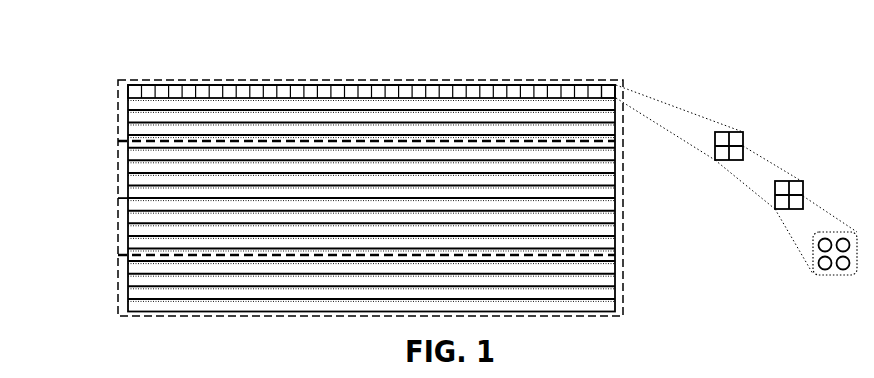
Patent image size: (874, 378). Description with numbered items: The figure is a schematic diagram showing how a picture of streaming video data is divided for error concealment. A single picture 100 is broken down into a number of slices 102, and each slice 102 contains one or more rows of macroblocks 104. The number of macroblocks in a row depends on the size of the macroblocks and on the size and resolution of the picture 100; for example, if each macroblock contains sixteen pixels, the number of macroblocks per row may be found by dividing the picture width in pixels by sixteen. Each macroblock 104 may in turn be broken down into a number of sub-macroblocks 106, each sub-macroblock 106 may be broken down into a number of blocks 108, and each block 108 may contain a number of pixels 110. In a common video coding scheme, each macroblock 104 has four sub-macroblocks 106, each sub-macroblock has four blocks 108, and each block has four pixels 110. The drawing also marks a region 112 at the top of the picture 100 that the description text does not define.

The picture 100 is at (207, 67).
The slice 102 is at (122, 91).
The macroblock 104 is at (716, 107).
The sub-macroblock 106 is at (816, 156).
The block 108 is at (792, 204).
The pixel 110 is at (843, 268).
The upper layer stack 112 is at (100, 80).